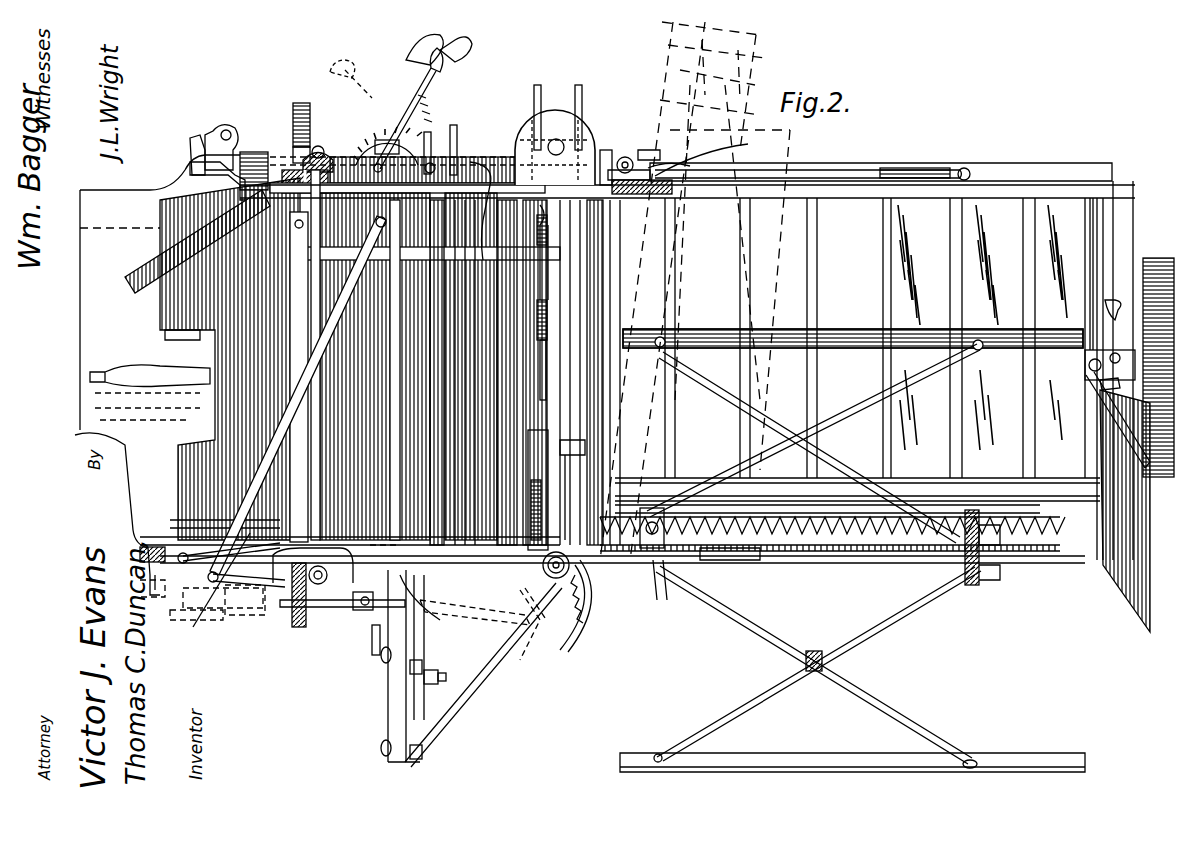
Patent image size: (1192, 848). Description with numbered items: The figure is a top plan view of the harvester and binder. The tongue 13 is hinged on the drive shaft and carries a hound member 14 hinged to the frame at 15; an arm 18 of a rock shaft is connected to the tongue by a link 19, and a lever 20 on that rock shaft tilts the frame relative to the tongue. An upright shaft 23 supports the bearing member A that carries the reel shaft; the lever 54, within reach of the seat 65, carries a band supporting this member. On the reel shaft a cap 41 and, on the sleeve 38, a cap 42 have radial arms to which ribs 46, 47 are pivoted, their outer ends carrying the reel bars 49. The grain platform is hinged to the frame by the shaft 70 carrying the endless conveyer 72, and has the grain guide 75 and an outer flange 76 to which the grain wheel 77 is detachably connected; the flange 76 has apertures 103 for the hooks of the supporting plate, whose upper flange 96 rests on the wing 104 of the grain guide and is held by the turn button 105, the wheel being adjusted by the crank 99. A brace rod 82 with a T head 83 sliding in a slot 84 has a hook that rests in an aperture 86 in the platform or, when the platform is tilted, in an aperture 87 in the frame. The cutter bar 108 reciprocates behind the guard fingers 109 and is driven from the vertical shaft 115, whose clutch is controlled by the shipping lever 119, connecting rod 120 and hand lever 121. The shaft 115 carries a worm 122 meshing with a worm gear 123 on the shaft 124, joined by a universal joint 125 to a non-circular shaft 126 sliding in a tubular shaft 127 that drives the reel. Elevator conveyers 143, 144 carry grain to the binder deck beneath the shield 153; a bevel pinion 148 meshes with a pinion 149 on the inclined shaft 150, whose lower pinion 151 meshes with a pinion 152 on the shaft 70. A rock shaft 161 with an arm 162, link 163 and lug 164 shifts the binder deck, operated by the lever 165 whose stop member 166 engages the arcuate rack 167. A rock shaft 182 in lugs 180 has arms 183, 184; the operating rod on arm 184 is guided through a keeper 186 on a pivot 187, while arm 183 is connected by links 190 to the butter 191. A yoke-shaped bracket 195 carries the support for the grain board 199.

The tongue 13 is at (386, 708).
The hound member 14 is at (512, 650).
The hinge connection of hound member 15 is at (568, 604).
The arm 18 is at (480, 580).
The link 19 is at (424, 640).
The lever 20 is at (545, 375).
The upright shaft 23 is at (560, 640).
The sleeve 38 is at (745, 562).
The cap 41 is at (660, 600).
The cap 42 is at (982, 572).
The rib 46 is at (690, 552).
The rib 47 is at (945, 566).
The reel bar 49 is at (780, 328).
The lever 54 is at (548, 402).
The seat 65 is at (578, 130).
The shaft 70 is at (643, 160).
The endless conveyer 72 is at (857, 472).
The grain guide 75 is at (1120, 580).
The flange 76 is at (1128, 218).
The grain wheel 77 is at (1158, 258).
The brace rod 82 is at (832, 166).
The T head 83 is at (966, 166).
The slot 84 is at (940, 168).
The aperture 86 is at (735, 150).
The aperture 87 is at (455, 135).
The laterally extending flange 96 is at (1092, 340).
The crank 99 is at (1085, 362).
The apertures 103 is at (1112, 305).
The wing 104 is at (1100, 395).
The turn button 105 is at (1098, 386).
The cutter bar 108 is at (790, 548).
The guard fingers 109 is at (880, 546).
The vertically disposed shaft 115 is at (348, 607).
The shipping lever 119 is at (400, 510).
The connecting rod 120 is at (452, 333).
The hand lever 121 is at (440, 150).
The worm 122 is at (360, 612).
The worm gear 123 is at (299, 627).
The shaft 124 is at (320, 610).
The universal joint 125 is at (375, 655).
The non-circular shaft 126 is at (434, 640).
The tubular shaft 127 is at (530, 600).
The endless conveyer 143 is at (490, 175).
The endless conveyer 144 is at (350, 408).
The bevel pinion 148 is at (262, 150).
The bevel pinion 149 is at (318, 148).
The inclined shaft 150 is at (300, 110).
The bevel pinion 151 is at (606, 150).
The bevel pinion 152 is at (625, 156).
The shield 153 is at (215, 458).
The rock shaft 161 is at (290, 166).
The arm 162 is at (250, 108).
The link 163 is at (218, 134).
The lug 164 is at (82, 335).
The operating lever 165 is at (445, 72).
The spring actuated stop member 166 is at (420, 100).
The arcuate rack 167 is at (370, 128).
The lug 180 is at (282, 600).
The rock shaft 182 is at (265, 590).
The arm 183 is at (150, 610).
The arm 184 is at (195, 620).
The keeper 186 is at (330, 376).
The pivot 187 is at (328, 333).
The link 190 is at (200, 524).
The butter 191 is at (210, 488).
The yoke-shaped bracket 195 is at (222, 162).
The grain board 199 is at (150, 273).
The bearing member A is at (598, 585).